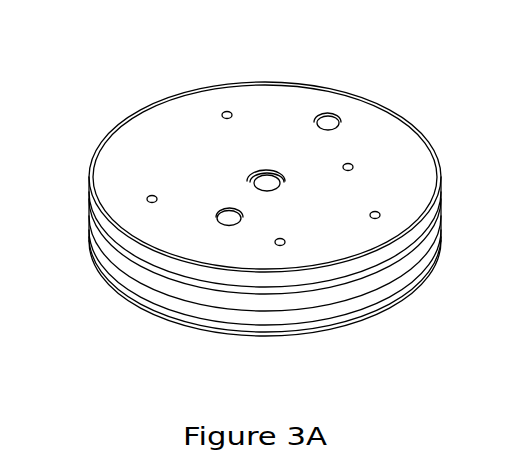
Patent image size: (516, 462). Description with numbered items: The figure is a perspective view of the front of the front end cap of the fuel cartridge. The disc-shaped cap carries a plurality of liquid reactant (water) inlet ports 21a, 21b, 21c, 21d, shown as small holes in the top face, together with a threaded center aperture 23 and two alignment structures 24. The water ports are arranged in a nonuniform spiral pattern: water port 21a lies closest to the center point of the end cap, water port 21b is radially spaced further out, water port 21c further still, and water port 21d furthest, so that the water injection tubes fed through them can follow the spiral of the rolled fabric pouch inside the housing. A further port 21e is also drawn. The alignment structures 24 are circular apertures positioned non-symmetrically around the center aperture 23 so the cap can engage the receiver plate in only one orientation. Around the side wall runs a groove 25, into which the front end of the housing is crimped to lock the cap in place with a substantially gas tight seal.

The liquid reactant inlet port 21a is at (515, 150).
The liquid reactant inlet port 21b is at (295, 254).
The liquid reactant inlet port 21c is at (134, 208).
The liquid reactant inlet port 21d is at (217, 102).
The fastener hole 21e is at (388, 228).
The threaded center aperture 23 is at (286, 184).
The alignment structures 24 is at (304, 122).
The groove 25 is at (166, 295).